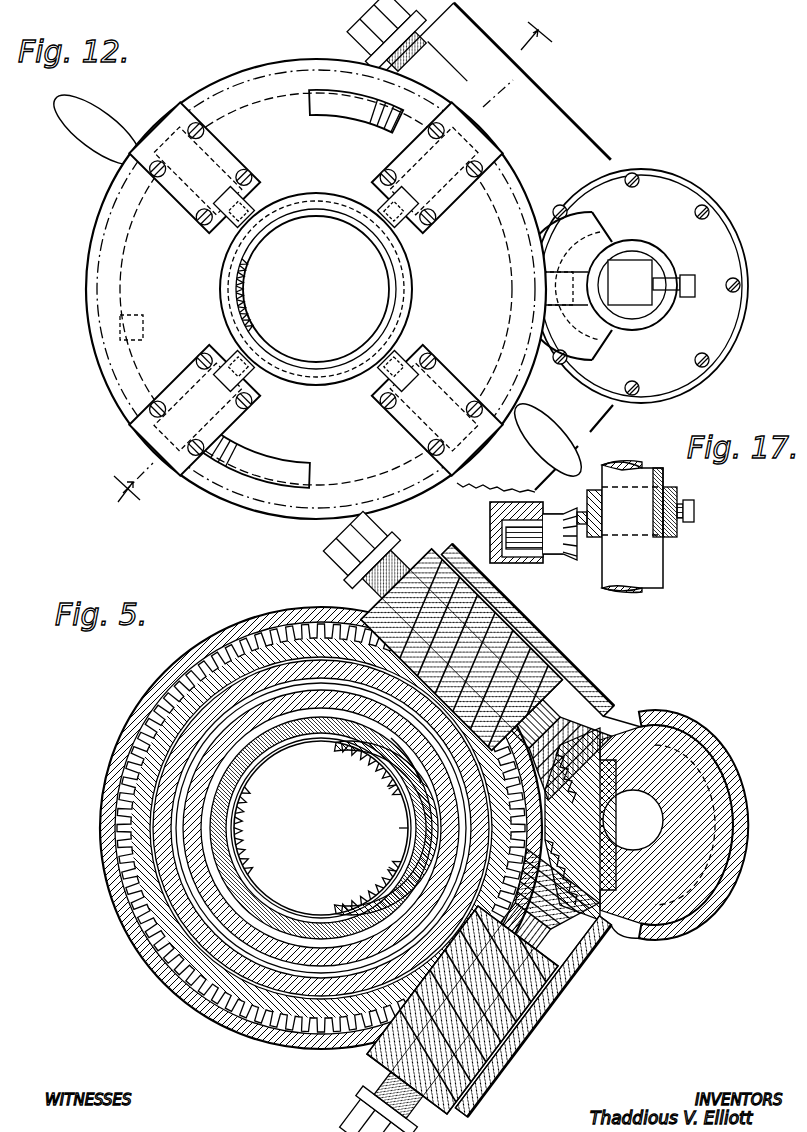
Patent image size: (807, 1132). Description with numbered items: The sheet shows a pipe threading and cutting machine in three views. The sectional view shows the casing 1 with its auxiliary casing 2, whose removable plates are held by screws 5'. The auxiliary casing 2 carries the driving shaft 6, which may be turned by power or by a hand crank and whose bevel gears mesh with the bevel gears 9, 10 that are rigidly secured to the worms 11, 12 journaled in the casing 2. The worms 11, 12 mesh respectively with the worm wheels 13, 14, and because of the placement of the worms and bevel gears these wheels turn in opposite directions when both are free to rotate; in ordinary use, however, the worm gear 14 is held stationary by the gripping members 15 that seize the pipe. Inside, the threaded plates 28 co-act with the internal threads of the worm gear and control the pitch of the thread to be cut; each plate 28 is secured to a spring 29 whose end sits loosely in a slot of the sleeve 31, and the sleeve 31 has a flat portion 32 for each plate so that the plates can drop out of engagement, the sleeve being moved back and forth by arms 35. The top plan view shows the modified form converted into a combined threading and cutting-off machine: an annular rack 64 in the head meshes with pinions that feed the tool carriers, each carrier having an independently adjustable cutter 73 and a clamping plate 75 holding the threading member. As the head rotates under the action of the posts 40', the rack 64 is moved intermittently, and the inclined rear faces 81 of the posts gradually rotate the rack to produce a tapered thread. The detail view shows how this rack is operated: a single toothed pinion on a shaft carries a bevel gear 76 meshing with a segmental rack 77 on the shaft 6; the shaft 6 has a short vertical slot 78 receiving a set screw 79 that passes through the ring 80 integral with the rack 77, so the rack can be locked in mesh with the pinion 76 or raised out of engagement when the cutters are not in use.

In FIG. 5, the casing 1 is at (190, 990).
In FIG. 12, the auxiliary casing 2 is at (722, 352).
In FIG. 5, the auxiliary casing 2 is at (700, 932).
In FIG. 12, the screws 5' is at (646, 284).
In FIG. 12, the driving shaft 6 is at (642, 277).
In FIG. 17, the driving shaft 6 is at (652, 570).
In FIG. 5, the driving shaft 6 is at (650, 822).
In FIG. 5, the bevel gear 9 is at (375, 828).
In FIG. 5, the bevel gear 10 is at (618, 940).
In FIG. 5, the worm 11 is at (528, 1018).
In FIG. 5, the worm 12 is at (507, 668).
In FIG. 12, the worm wheel 13 is at (330, 269).
In FIG. 5, the worm wheel 13 is at (540, 836).
In FIG. 5, the worm wheel 14 is at (542, 755).
In FIG. 12, the gripping members 15 is at (236, 290).
In FIG. 17, the gripping members 15 is at (520, 552).
In FIG. 5, the gripping members 15 is at (321, 828).
In FIG. 5, the threaded plates 28 is at (363, 768).
In FIG. 5, the spring 29 is at (387, 828).
In FIG. 5, the sleeve 31 is at (373, 880).
In FIG. 5, the flat portion 32 is at (385, 775).
In FIG. 12, the arms 35 is at (548, 428).
In FIG. 12, the posts 40' is at (241, 252).
In FIG. 12, the annular rack 64 is at (520, 190).
In FIG. 17, the annular rack 64 is at (532, 512).
In FIG. 12, the cutter 73 is at (398, 232).
In FIG. 12, the clamping plate 75 is at (438, 200).
In FIG. 12, the bevel gear 76 is at (570, 250).
In FIG. 17, the bevel gear 76 is at (578, 548).
In FIG. 12, the segmental rack 77 is at (596, 350).
In FIG. 17, the segmental rack 77 is at (575, 508).
In FIG. 17, the vertical slot 78 is at (660, 468).
In FIG. 12, the set screw 79 is at (696, 286).
In FIG. 17, the set screw 79 is at (695, 498).
In FIG. 17, the ring 80 is at (676, 530).
In FIG. 12, the inclined rear faces 81 is at (398, 124).